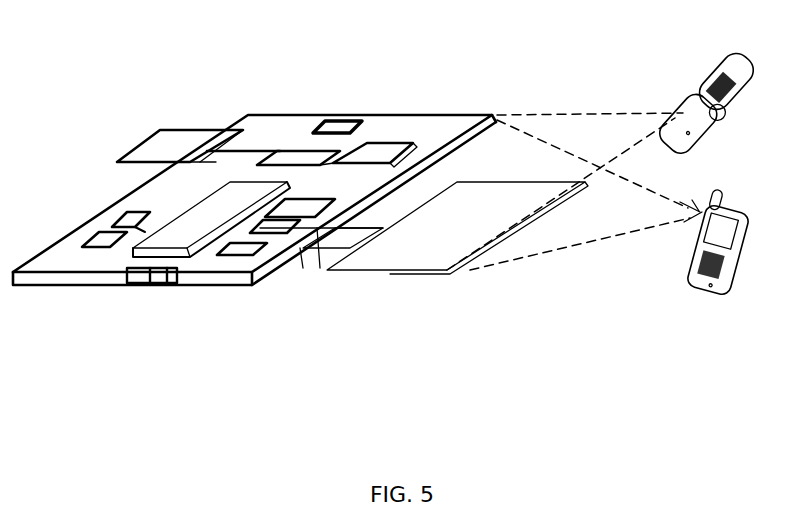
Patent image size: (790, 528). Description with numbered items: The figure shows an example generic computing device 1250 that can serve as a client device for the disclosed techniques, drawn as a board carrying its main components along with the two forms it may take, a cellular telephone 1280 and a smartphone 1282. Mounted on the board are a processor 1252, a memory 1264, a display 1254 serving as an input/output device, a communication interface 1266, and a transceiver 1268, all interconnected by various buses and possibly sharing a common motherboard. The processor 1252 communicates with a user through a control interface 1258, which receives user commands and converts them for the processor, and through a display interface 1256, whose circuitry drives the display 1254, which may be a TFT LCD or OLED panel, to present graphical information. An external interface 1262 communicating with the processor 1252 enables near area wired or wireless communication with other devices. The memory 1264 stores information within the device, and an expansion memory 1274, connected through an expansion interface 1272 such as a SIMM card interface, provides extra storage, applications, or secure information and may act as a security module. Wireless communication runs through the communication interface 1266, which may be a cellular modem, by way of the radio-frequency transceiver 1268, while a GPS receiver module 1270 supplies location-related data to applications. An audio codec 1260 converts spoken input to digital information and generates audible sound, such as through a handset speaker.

The computing device 1250 is at (226, 90).
The processor 1252 is at (178, 284).
The display 1254 is at (448, 272).
The display interface 1256 is at (258, 283).
The control interface 1258 is at (300, 253).
The audio codec 1260 is at (316, 251).
The external interface 1262 is at (150, 286).
The memory 1264 is at (94, 232).
The communication interface 1266 is at (298, 150).
The transceiver 1268 is at (376, 145).
The GPS receiver module 1270 is at (338, 119).
The expansion interface 1272 is at (218, 126).
The expansion memory 1274 is at (159, 128).
The cellular telephone 1280 is at (718, 56).
The smartphone 1282 is at (700, 194).